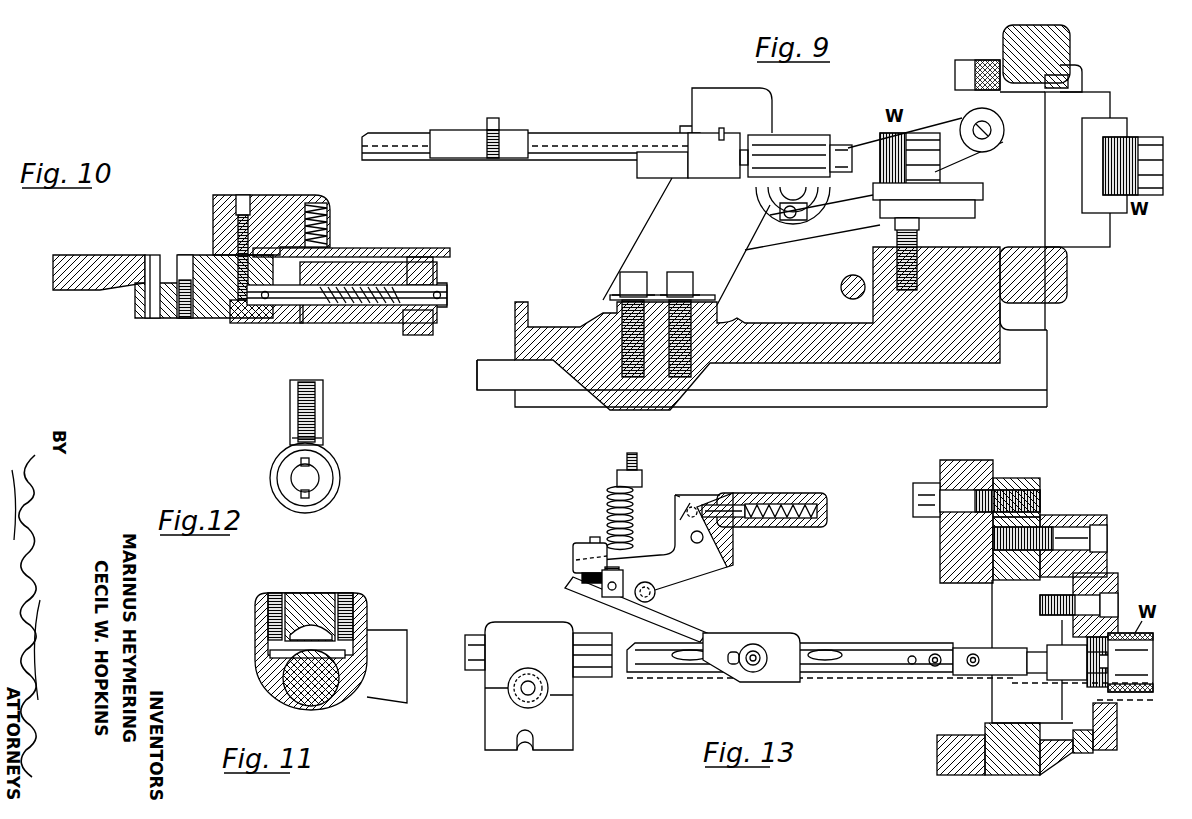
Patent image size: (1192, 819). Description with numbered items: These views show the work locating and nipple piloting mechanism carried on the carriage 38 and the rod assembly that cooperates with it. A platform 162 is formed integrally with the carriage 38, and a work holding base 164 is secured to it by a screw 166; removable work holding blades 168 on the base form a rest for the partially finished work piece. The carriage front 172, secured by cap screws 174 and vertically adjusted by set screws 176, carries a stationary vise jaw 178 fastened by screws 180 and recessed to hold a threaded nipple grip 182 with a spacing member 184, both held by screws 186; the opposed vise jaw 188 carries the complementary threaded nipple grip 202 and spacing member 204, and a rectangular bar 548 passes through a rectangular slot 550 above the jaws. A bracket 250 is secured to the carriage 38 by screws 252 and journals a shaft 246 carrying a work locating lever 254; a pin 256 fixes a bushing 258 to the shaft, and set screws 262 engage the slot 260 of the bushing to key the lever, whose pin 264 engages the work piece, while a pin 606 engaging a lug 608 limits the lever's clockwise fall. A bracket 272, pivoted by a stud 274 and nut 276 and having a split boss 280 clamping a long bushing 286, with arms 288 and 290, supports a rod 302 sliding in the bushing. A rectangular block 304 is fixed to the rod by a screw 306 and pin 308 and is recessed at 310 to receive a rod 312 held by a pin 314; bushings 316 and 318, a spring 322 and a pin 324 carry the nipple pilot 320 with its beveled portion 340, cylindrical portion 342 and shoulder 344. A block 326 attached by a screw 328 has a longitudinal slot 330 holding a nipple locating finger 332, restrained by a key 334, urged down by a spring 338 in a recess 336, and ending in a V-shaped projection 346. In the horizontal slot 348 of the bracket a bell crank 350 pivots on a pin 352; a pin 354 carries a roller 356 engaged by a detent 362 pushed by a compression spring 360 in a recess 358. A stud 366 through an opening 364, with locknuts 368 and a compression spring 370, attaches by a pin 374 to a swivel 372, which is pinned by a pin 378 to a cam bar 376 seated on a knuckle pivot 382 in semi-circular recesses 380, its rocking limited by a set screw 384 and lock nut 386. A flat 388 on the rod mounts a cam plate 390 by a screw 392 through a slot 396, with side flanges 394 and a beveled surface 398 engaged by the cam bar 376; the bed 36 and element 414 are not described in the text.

In FIG. 9, the bed 36 is at (500, 378).
In FIG. 9, the carriage 38 is at (790, 345).
In FIG. 13, the carriage 38 is at (943, 550).
In FIG. 9, the platform 162 is at (880, 315).
In FIG. 9, the work holding base 164 is at (983, 230).
In FIG. 9, the screw 166 is at (897, 245).
In FIG. 9, the work holding blades 168 is at (985, 190).
In FIG. 9, the carriage front 172 is at (1010, 40).
In FIG. 13, the carriage front 172 is at (1010, 478).
In FIG. 13, the cap screws 174 is at (925, 483).
In FIG. 9, the set screws 176 is at (975, 68).
In FIG. 9, the stationary vise jaw 178 is at (1055, 118).
In FIG. 13, the stationary vise jaw 178 is at (1058, 515).
In FIG. 13, the screws 180 is at (1107, 538).
In FIG. 9, the threaded nipple grip 182 is at (1118, 118).
In FIG. 13, the threaded nipple grip 182 is at (1118, 585).
In FIG. 9, the spacing member 184 is at (1100, 213).
In FIG. 13, the spacing member 184 is at (1075, 622).
In FIG. 13, the screws 186 is at (1118, 603).
In FIG. 13, the vise jaw 188 is at (1050, 765).
In FIG. 13, the threaded nipple grip 202 is at (1112, 735).
In FIG. 13, the spacing member 204 is at (1083, 752).
In FIG. 9, the shaft 246 is at (778, 183).
In FIG. 11, the shaft 246 is at (290, 680).
In FIG. 9, the bracket 250 is at (710, 252).
In FIG. 13, the bracket 250 is at (795, 493).
In FIG. 9, the screws 252 is at (682, 272).
In FIG. 9, the work locating lever 254 is at (950, 120).
In FIG. 11, the work locating lever 254 is at (312, 593).
In FIG. 11, the pin 256 is at (270, 655).
In FIG. 11, the bushing 258 is at (325, 705).
In FIG. 11, the slot 260 is at (308, 625).
In FIG. 11, the set screws 262 is at (268, 605).
In FIG. 9, the pin 264 is at (990, 135).
In FIG. 13, the bracket 272 is at (555, 715).
In FIG. 13, the stud 274 is at (535, 665).
In FIG. 13, the nut 276 is at (548, 690).
In FIG. 13, the boss 280 is at (540, 622).
In FIG. 13, the long bushing 286 is at (583, 633).
In FIG. 13, the arm 288 is at (490, 740).
In FIG. 13, the arm 290 is at (573, 742).
In FIG. 9, the rod 302 is at (392, 133).
In FIG. 10, the rod 302 is at (100, 255).
In FIG. 13, the rod 302 is at (880, 655).
In FIG. 9, the rectangular block 304 is at (712, 163).
In FIG. 10, the rectangular block 304 is at (205, 318).
In FIG. 10, the screw 306 is at (185, 258).
In FIG. 13, the screw 306 is at (935, 655).
In FIG. 10, the pin 308 is at (151, 258).
In FIG. 13, the pin 308 is at (912, 655).
In FIG. 10, the recess 310 is at (265, 300).
In FIG. 9, the rod 312 is at (848, 157).
In FIG. 10, the rod 312 is at (441, 292).
In FIG. 10, the pin 314 is at (272, 320).
In FIG. 10, the bushing 316 is at (290, 315).
In FIG. 10, the bushing 318 is at (440, 312).
In FIG. 9, the nipple pilot 320 is at (800, 147).
In FIG. 10, the nipple pilot 320 is at (355, 323).
In FIG. 12, the nipple pilot 320 is at (282, 470).
In FIG. 13, the nipple pilot 320 is at (1053, 680).
In FIG. 10, the spring 322 is at (380, 305).
In FIG. 10, the pin 324 is at (447, 295).
In FIG. 12, the pin 324 is at (310, 462).
In FIG. 13, the pin 324 is at (1101, 662).
In FIG. 9, the block 326 is at (700, 88).
In FIG. 10, the block 326 is at (275, 197).
In FIG. 12, the block 326 is at (290, 405).
In FIG. 13, the block 326 is at (990, 657).
In FIG. 10, the screw 328 is at (230, 210).
In FIG. 13, the screw 328 is at (973, 667).
In FIG. 10, the longitudinal slot 330 is at (300, 197).
In FIG. 12, the longitudinal slot 330 is at (318, 436).
In FIG. 10, the nipple locating finger 332 is at (395, 248).
In FIG. 12, the nipple locating finger 332 is at (292, 436).
In FIG. 13, the nipple locating finger 332 is at (1043, 673).
In FIG. 9, the key 334 is at (720, 128).
In FIG. 10, the key 334 is at (252, 188).
In FIG. 10, the recess 336 is at (328, 205).
In FIG. 10, the spring 338 is at (330, 230).
In FIG. 12, the spring 338 is at (315, 405).
In FIG. 10, the beveled portion 340 is at (428, 322).
In FIG. 10, the cylindrical portion 342 is at (420, 335).
In FIG. 12, the cylindrical portion 342 is at (313, 510).
In FIG. 10, the shoulder 344 is at (415, 257).
In FIG. 12, the shoulder 344 is at (338, 485).
In FIG. 10, the V-shaped projection 346 is at (450, 253).
In FIG. 13, the horizontal slot 348 is at (713, 493).
In FIG. 13, the bell crank 350 is at (700, 565).
In FIG. 13, the pin 352 is at (703, 538).
In FIG. 13, the pin 354 is at (688, 512).
In FIG. 13, the roller 356 is at (680, 497).
In FIG. 13, the recess 358 is at (808, 493).
In FIG. 13, the compression spring 360 is at (797, 527).
In FIG. 13, the detent 362 is at (738, 505).
In FIG. 13, the opening 364 is at (573, 555).
In FIG. 13, the stud 366 is at (627, 462).
In FIG. 13, the locknuts 368 is at (617, 480).
In FIG. 13, the compression spring 370 is at (607, 500).
In FIG. 13, the swivel 372 is at (583, 577).
In FIG. 13, the pin 374 is at (620, 570).
In FIG. 13, the cam bar 376 is at (692, 622).
In FIG. 13, the pin 378 is at (612, 592).
In FIG. 13, the semi-circular recesses 380 is at (645, 603).
In FIG. 13, the knuckle pivot 382 is at (656, 592).
In FIG. 13, the set screw 384 is at (595, 540).
In FIG. 13, the lock nut 386 is at (580, 566).
In FIG. 9, the flat 388 is at (560, 133).
In FIG. 13, the flat 388 is at (820, 672).
In FIG. 9, the cam plate 390 is at (460, 130).
In FIG. 13, the cam plate 390 is at (768, 682).
In FIG. 9, the screw 392 is at (495, 118).
In FIG. 13, the screw 392 is at (755, 645).
In FIG. 9, the side flanges 394 is at (505, 150).
In FIG. 13, the slot 396 is at (737, 665).
In FIG. 13, the beveled surface 398 is at (795, 633).
In FIG. 9, the pin 414 is at (841, 287).
In FIG. 9, the rectangular bar 548 is at (1082, 85).
In FIG. 9, the rectangular slot 550 is at (1062, 55).
In FIG. 9, the pin 606 is at (790, 220).
In FIG. 9, the lug 608 is at (773, 215).